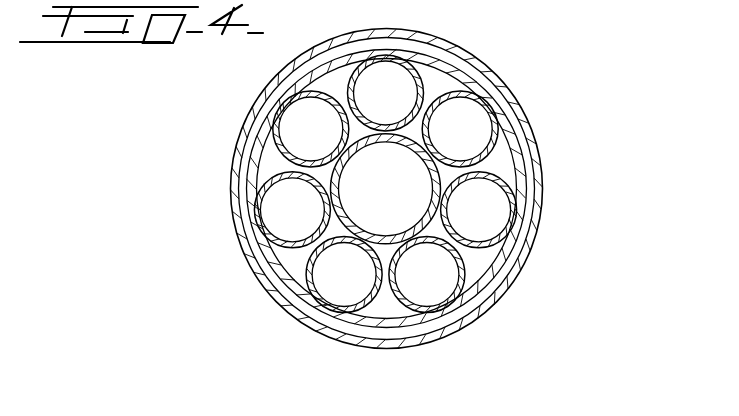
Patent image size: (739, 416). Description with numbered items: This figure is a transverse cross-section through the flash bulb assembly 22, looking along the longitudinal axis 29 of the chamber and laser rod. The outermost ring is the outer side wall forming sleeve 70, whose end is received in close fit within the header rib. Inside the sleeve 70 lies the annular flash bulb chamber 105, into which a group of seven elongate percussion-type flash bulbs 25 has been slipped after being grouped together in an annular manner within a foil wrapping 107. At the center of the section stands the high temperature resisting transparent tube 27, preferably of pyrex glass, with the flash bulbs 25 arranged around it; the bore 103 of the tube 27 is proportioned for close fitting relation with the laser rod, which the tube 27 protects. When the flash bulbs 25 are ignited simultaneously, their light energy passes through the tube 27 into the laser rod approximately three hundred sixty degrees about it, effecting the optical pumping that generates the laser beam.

The flash bulb assembly 22 is at (524, 94).
The outer side wall forming sleeve 70 is at (542, 176).
The annular flash bulb chamber 105 is at (503, 162).
The foil wrapping 107 is at (488, 288).
The flash bulbs 25 is at (268, 99).
The high temperature resisting transparent tube 27 is at (321, 171).
The bore 103 is at (400, 141).
The longitudinal axis 29 is at (385, 188).